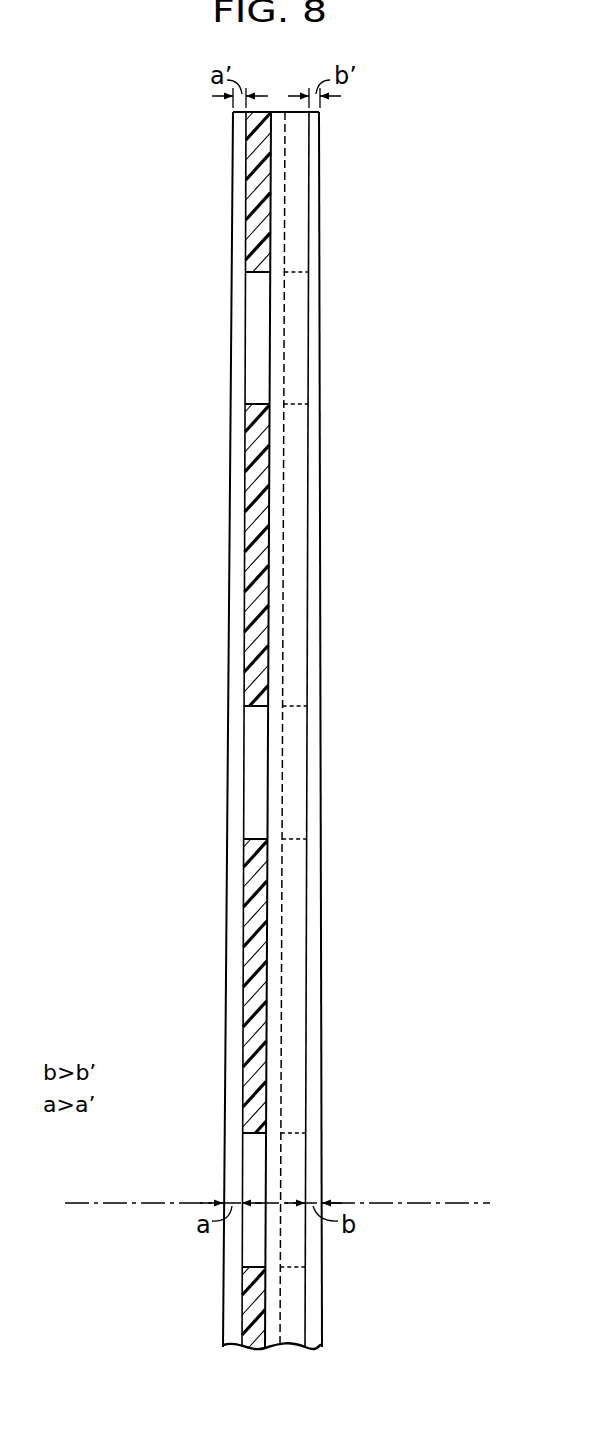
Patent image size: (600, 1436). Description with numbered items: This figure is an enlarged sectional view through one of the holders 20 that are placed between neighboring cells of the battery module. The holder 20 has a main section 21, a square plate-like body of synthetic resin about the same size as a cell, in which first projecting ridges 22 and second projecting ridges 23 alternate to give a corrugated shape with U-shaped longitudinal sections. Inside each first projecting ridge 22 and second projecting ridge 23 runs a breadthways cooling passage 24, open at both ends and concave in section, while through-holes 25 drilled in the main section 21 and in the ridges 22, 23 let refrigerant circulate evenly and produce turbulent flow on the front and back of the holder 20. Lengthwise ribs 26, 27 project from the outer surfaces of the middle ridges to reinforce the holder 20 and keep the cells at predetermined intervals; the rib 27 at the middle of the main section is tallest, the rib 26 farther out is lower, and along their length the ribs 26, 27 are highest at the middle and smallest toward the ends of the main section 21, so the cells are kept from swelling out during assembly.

The holder 20 is at (330, 534).
The main section 21 is at (253, 553).
The first projecting ridge 22 is at (308, 433).
The second projecting ridge 23 is at (247, 447).
The cooling passage 24 is at (262, 641).
The through-hole 25 is at (251, 274).
The rib 26 is at (312, 979).
The rib 27 is at (233, 930).